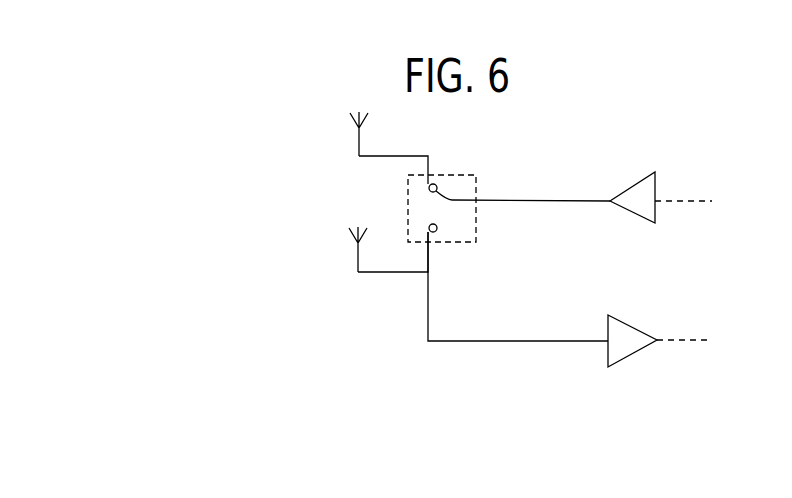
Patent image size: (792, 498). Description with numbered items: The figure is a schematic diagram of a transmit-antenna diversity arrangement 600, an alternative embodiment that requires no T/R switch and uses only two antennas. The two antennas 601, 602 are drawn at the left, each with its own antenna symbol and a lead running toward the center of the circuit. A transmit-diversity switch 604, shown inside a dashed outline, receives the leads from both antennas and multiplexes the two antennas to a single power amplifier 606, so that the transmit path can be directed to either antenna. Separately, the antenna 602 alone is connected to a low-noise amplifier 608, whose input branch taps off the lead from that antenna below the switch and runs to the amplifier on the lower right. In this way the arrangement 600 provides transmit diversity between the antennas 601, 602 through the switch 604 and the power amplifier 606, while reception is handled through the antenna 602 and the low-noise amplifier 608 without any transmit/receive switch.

The transmit-antenna diversity arrangement 600 is at (555, 118).
The antenna 601 is at (358, 139).
The antenna 602 is at (357, 253).
The transmit-diversity switch 604 is at (460, 175).
The power amplifier 606 is at (640, 182).
The low-noise amplifier 608 is at (607, 350).